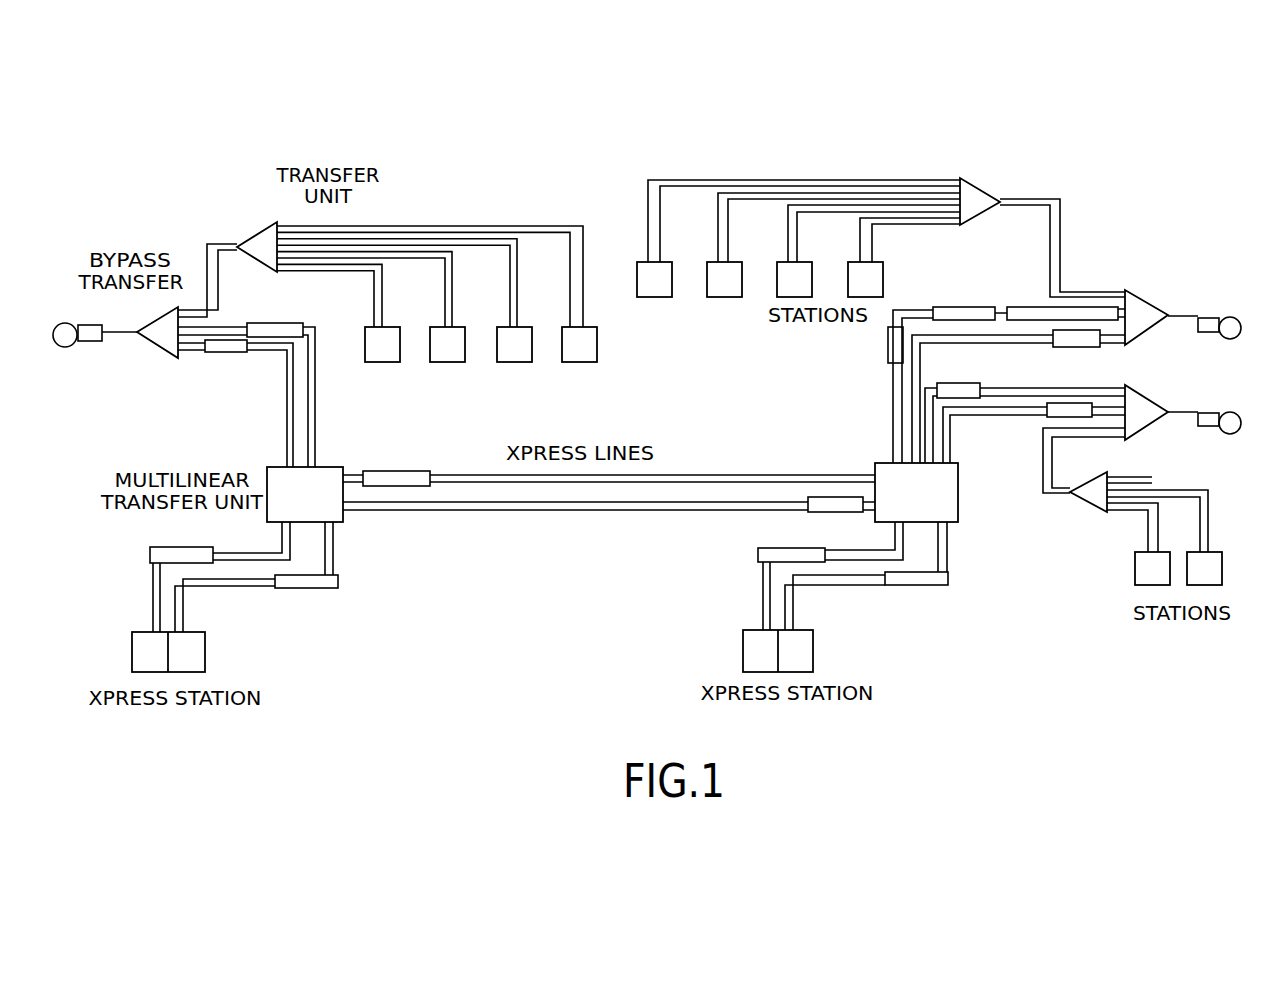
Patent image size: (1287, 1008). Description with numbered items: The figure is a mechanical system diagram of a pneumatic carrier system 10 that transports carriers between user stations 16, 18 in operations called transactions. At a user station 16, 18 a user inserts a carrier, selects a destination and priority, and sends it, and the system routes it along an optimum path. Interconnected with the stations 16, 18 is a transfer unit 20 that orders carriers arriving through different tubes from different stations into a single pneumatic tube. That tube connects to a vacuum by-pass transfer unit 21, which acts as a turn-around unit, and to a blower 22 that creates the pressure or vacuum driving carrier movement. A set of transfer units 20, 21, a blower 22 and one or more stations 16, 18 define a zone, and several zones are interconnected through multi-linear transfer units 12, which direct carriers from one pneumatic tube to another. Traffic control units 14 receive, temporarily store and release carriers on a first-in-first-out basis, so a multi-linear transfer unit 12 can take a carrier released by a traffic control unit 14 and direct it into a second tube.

The pneumatic carrier system 10 is at (535, 582).
The multi-linear transfer unit 12 is at (355, 525).
The traffic control unit 14 is at (270, 324).
The user station 16 is at (205, 648).
The user station 18 is at (365, 370).
The transfer unit 20 is at (240, 245).
The vacuum by-pass transfer unit 21 is at (185, 360).
The blower 22 is at (75, 348).